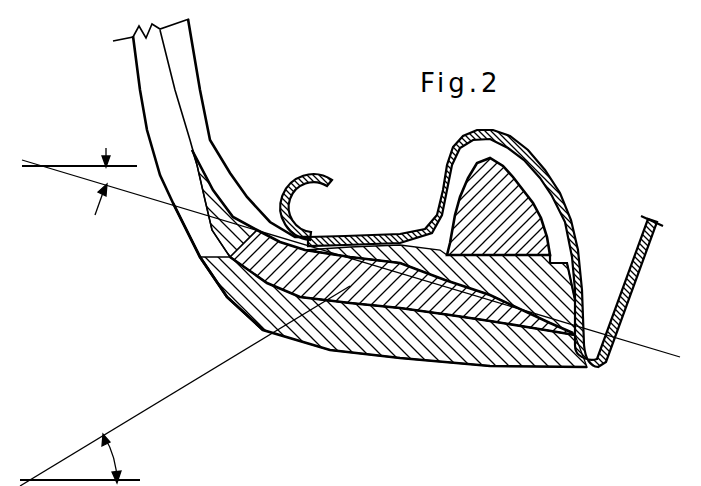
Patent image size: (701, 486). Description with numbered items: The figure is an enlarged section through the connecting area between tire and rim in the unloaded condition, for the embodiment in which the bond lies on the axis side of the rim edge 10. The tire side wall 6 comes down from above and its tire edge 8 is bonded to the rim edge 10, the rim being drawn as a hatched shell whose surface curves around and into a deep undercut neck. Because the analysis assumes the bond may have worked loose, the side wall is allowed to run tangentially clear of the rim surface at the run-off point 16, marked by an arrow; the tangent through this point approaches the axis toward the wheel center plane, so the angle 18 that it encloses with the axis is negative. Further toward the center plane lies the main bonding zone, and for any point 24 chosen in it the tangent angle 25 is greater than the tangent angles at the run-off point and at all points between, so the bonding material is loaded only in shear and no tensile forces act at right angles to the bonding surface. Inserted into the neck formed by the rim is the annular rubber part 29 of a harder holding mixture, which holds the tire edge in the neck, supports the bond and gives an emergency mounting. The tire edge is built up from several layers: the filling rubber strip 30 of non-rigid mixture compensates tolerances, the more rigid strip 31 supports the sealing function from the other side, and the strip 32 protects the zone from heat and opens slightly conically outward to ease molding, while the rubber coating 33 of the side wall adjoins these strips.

The side wall 6 is at (197, 78).
The tire edge 8 is at (243, 290).
The rim edge 10 is at (305, 245).
The run-off point 16 is at (308, 252).
The tangent angle 18 is at (351, 252).
The point in main bonding zone 24 is at (425, 243).
The tangent angle 25 is at (115, 460).
The annular rubber part 29 is at (505, 225).
The filling rubber strip 30 is at (550, 305).
The strip 31 is at (377, 302).
The strip 32 is at (352, 337).
The rubber coating 33 is at (197, 225).